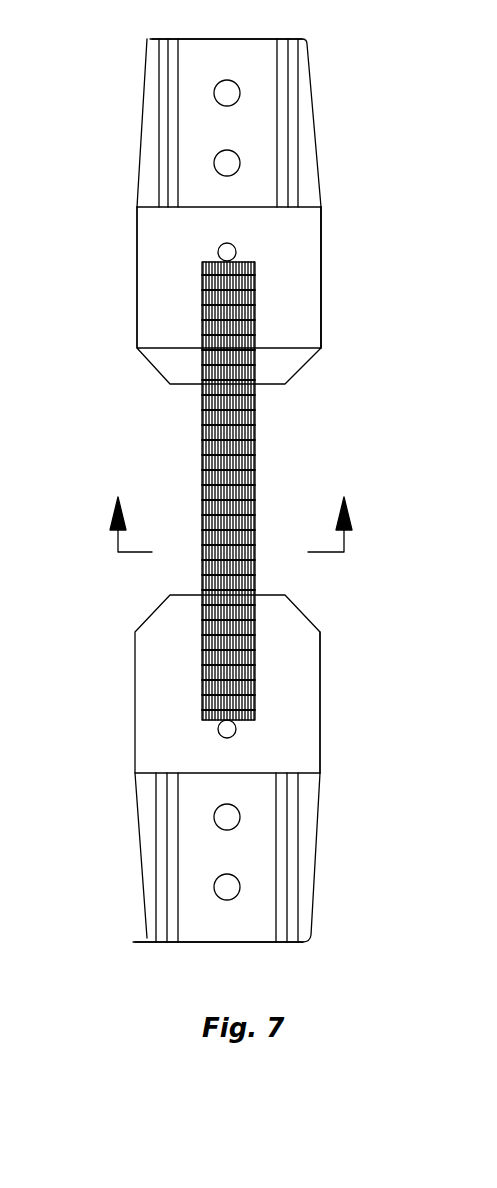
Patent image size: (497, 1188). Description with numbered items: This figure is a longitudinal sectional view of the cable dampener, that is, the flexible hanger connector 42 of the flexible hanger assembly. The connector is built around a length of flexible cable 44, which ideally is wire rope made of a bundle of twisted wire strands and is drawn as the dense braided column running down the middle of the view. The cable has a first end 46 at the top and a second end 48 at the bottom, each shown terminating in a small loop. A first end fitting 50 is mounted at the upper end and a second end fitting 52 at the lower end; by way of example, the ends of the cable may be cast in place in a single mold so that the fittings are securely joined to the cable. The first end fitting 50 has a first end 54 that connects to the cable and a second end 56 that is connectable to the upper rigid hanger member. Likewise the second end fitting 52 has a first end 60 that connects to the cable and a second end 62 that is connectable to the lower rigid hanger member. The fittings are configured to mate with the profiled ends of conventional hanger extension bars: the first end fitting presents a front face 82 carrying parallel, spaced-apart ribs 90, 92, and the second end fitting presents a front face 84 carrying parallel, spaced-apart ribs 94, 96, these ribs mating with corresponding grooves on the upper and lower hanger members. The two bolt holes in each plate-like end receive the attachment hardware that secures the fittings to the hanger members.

The flexible hanger connector 42 is at (65, 354).
The flexible cable 44 is at (255, 432).
The first end of flexible cable 46 is at (255, 268).
The second end of flexible cable 48 is at (255, 690).
The first end fitting 50 is at (223, 295).
The second end fitting 52 is at (211, 684).
The first end of first end fitting 54 is at (312, 325).
The second end of first end fitting 56 is at (224, 105).
The first end of second end fitting 60 is at (305, 660).
The second end of second end fitting 62 is at (217, 881).
The front face of first end fitting 82 is at (242, 52).
The front face of second end fitting 84 is at (236, 925).
The rib 90 is at (168, 82).
The rib 92 is at (293, 77).
The rib 94 is at (160, 848).
The rib 96 is at (290, 830).